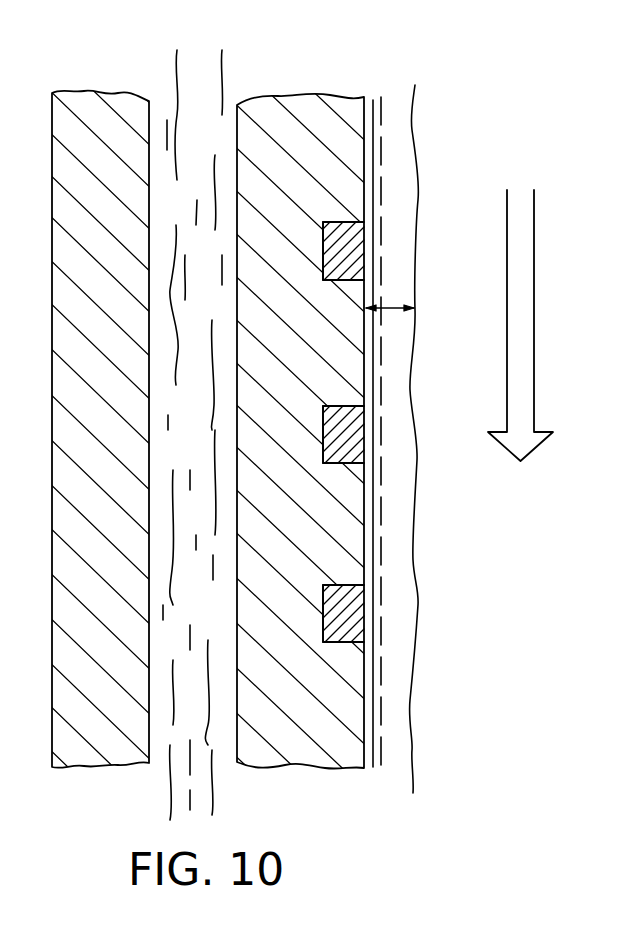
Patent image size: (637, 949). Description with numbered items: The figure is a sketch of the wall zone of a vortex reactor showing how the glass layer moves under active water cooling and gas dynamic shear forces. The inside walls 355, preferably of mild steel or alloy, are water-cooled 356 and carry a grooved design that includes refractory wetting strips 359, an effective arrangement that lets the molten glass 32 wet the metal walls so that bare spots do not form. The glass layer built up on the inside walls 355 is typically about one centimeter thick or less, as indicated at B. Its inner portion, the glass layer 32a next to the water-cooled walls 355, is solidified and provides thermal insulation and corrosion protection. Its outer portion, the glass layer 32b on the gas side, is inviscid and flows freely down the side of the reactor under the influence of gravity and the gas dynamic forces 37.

The inside walls 355 is at (297, 103).
The water cooling 356 is at (193, 67).
The refractory wetting strips 359 is at (350, 251).
The molten glass 32 is at (421, 663).
The glass layer next to water-cooled walls 32a is at (375, 106).
The glass layer on gas side 32b is at (398, 143).
The gas dynamic forces 37 is at (520, 338).
The glass layer thickness B is at (390, 295).